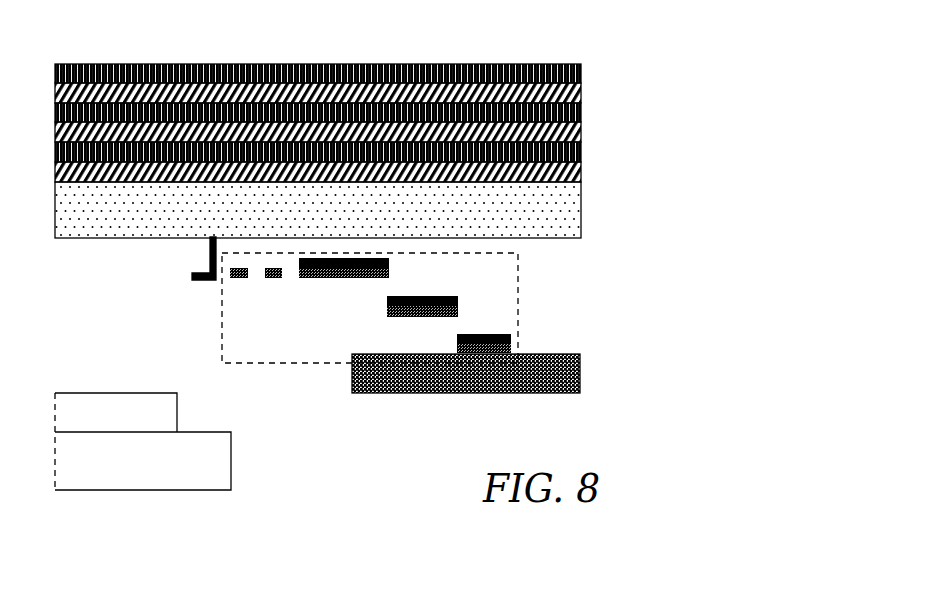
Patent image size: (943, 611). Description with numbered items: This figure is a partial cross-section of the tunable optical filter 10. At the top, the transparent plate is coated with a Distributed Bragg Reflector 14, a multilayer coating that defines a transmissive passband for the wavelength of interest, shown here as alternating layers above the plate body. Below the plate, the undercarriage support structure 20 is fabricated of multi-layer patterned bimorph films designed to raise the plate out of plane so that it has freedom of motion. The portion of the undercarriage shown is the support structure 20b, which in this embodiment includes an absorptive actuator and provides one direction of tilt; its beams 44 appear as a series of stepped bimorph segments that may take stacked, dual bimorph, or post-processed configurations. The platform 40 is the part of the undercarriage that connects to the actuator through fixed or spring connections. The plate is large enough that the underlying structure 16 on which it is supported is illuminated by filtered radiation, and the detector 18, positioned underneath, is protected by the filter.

The tunable optical filter 10 is at (419, 145).
The Distributed Bragg Reflector 14 is at (590, 65).
The underlying structure 16 is at (580, 375).
The detector 18 is at (231, 456).
The undercarriage support structure 20 is at (410, 305).
The support structure 20b is at (316, 320).
The platform 40 is at (199, 255).
The beams 44 is at (389, 266).